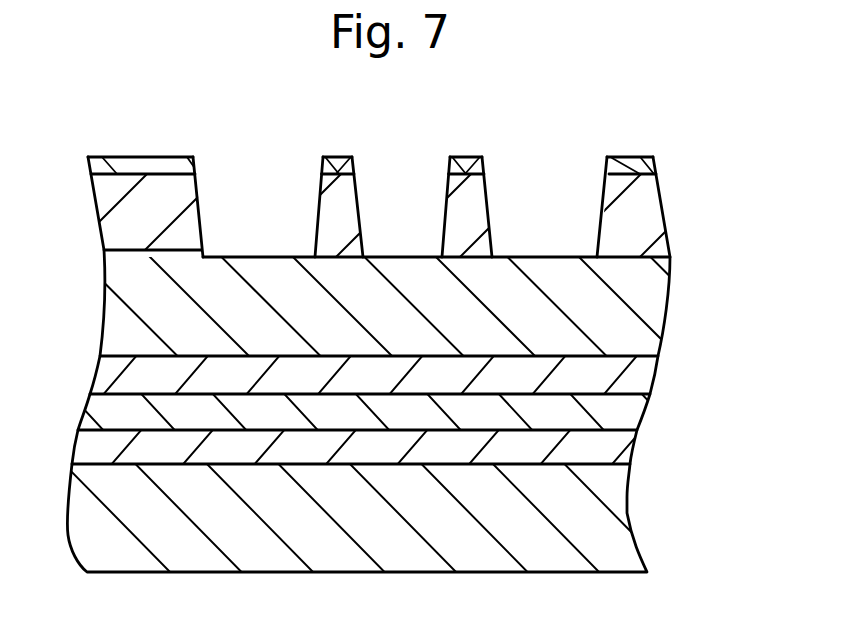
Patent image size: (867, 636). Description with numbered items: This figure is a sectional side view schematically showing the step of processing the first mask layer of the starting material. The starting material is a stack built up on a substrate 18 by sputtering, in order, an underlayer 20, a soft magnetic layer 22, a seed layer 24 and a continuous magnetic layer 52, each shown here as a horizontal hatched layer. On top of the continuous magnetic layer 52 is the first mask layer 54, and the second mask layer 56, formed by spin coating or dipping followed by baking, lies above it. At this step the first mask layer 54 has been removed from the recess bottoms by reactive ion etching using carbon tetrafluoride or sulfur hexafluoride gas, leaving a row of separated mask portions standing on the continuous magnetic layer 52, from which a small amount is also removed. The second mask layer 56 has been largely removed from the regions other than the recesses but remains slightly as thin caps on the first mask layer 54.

The substrate 18 is at (627, 500).
The underlayer 20 is at (637, 448).
The soft magnetic layer 22 is at (648, 408).
The seed layer 24 is at (658, 369).
The continuous magnetic layer 52 is at (668, 304).
The first mask layer 54 is at (665, 212).
The second mask layer 56 is at (653, 158).